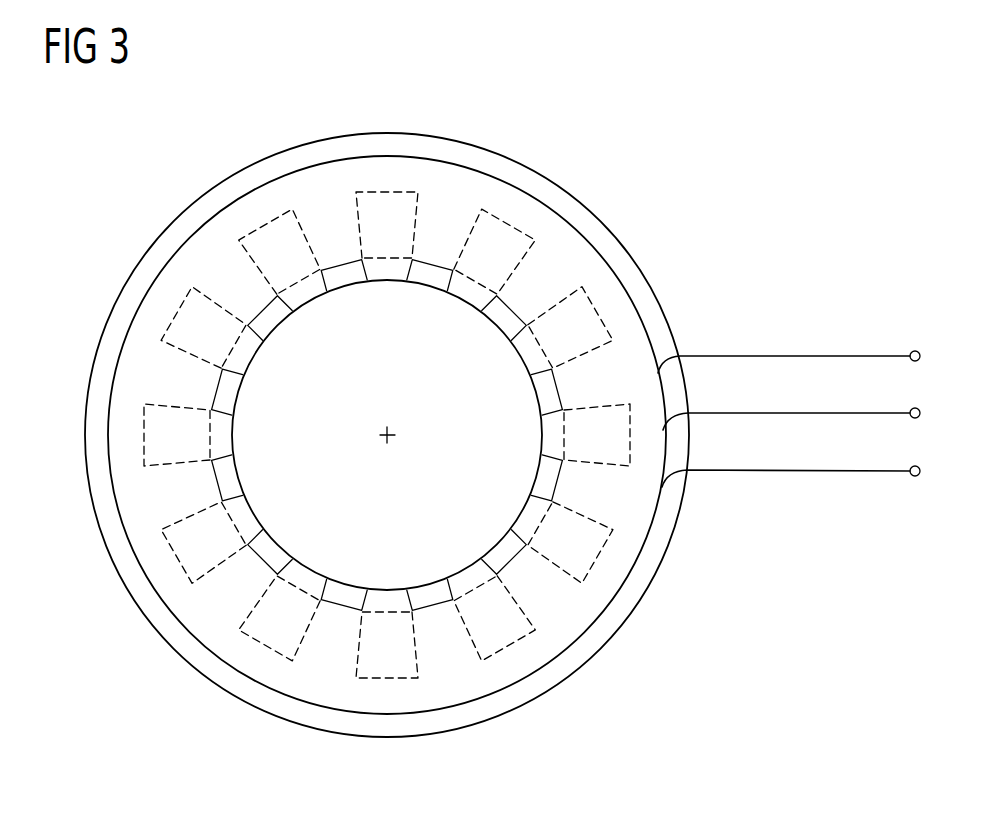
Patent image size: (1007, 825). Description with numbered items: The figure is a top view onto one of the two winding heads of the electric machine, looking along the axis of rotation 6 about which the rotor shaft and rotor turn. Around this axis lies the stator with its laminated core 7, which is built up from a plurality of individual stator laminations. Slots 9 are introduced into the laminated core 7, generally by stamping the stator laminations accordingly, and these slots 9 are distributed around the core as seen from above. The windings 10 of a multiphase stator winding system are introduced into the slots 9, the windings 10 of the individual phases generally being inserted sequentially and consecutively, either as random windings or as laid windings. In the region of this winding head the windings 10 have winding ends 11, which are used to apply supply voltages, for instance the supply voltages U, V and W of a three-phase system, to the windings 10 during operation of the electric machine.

The axis of rotation 6 is at (387, 435).
The laminated core 7 is at (607, 227).
The slots 9 is at (283, 217).
The windings 10 is at (138, 365).
The winding ends 11 is at (760, 356).